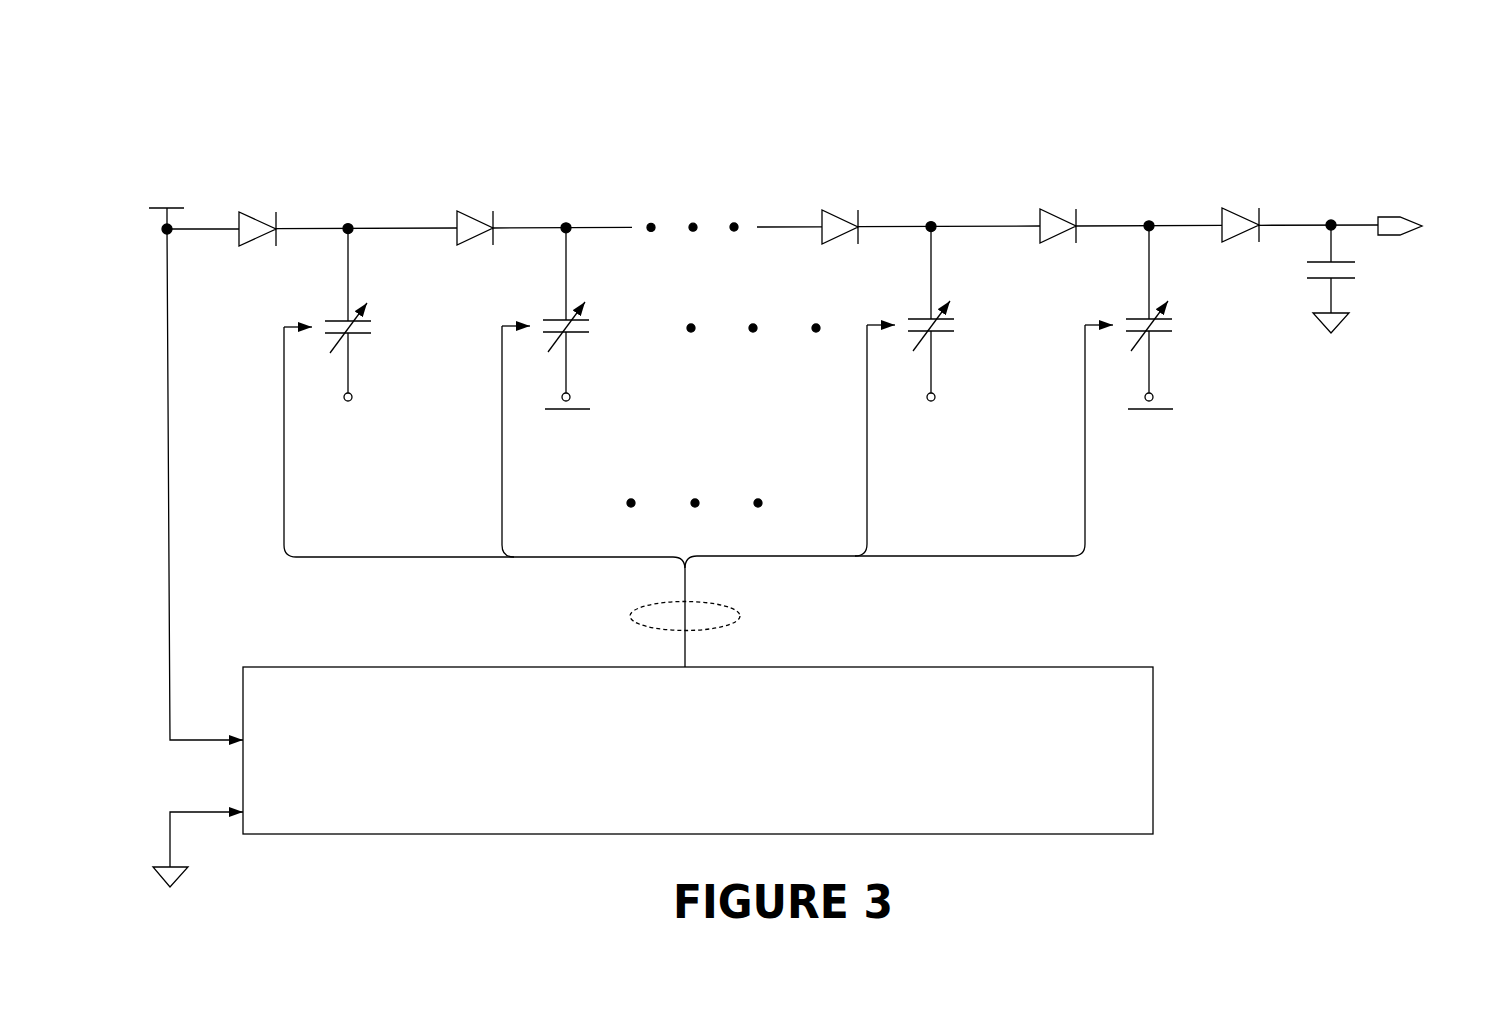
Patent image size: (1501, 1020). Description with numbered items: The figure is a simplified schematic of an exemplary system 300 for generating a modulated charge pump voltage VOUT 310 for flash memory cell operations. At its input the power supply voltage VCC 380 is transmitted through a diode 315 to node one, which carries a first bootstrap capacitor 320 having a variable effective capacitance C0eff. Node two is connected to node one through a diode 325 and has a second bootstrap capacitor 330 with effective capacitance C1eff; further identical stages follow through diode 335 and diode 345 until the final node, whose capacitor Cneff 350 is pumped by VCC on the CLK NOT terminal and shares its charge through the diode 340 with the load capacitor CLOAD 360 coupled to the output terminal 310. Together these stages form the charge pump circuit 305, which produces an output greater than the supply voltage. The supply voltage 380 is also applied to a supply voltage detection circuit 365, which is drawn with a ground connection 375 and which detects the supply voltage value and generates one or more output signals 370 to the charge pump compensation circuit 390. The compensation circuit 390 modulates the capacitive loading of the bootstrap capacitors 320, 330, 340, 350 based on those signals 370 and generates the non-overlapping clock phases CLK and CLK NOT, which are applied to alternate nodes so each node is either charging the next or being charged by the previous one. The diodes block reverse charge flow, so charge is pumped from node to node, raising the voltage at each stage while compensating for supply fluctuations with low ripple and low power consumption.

The system 300 is at (1017, 107).
The charge pump circuit 305 is at (602, 163).
The charge pump output voltage 310 is at (1358, 223).
The diode 315 is at (258, 258).
The first bootstrap capacitor 320 is at (378, 360).
The diode 325 is at (477, 258).
The second bootstrap capacitor 330 is at (596, 360).
The diode 335 is at (840, 258).
The diode 340 is at (1240, 195).
The diode 345 is at (1060, 255).
The final bootstrap capacitor 350 is at (1180, 355).
The load capacitor 360 is at (1360, 298).
The supply voltage detection circuit 365 is at (1156, 772).
The output signals 370 is at (737, 612).
The ground connection 375 is at (172, 833).
The supply voltage 380 is at (205, 741).
The charge pump compensation circuit 390 is at (267, 320).